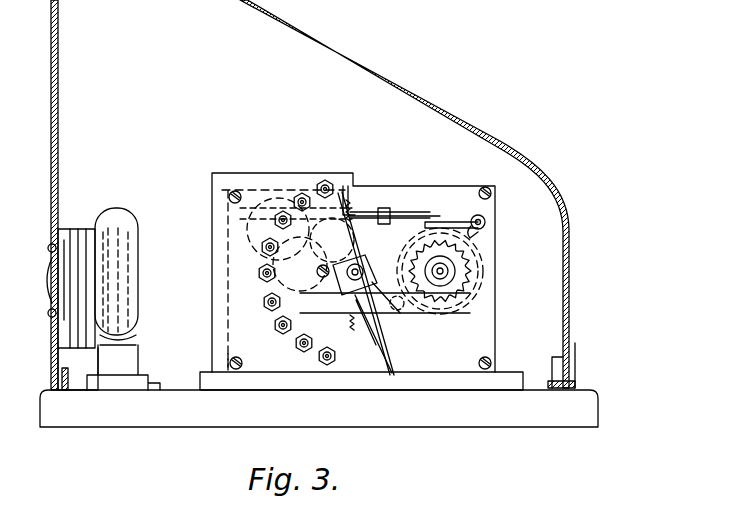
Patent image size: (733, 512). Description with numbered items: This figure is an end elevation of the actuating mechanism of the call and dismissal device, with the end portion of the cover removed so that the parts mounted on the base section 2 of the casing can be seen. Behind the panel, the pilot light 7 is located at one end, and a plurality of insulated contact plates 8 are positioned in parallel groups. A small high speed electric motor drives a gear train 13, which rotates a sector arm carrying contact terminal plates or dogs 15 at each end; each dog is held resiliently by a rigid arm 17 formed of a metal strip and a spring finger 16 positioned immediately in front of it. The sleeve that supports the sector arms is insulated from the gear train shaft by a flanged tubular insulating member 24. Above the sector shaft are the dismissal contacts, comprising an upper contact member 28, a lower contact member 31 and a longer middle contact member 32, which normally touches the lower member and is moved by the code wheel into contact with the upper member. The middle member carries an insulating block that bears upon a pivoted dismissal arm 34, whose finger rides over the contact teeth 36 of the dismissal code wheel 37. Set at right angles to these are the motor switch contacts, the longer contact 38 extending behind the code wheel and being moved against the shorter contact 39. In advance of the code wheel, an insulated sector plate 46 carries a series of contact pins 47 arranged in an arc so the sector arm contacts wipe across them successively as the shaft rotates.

The base section 2 is at (598, 397).
The pilot light 7 is at (133, 261).
The contact plates 8 is at (85, 229).
The gear train 13 is at (388, 262).
The contact terminal plates or dogs 15 is at (338, 192).
The spring finger 16 is at (350, 203).
The rigid arm 17 is at (340, 203).
The flanged tubular insulating member 24 is at (395, 318).
The upper contact member 28 is at (384, 226).
The lower contact member 31 is at (355, 272).
The middle contact member 32 is at (428, 225).
The dismissal arm 34 is at (468, 222).
The contact teeth 36 is at (472, 278).
The dismissal code wheel 37 is at (462, 292).
The motor switch contact 38 is at (432, 316).
The motor switch contact 39 is at (382, 350).
The insulated sector plate 46 is at (235, 322).
The contact pins 47 is at (283, 333).